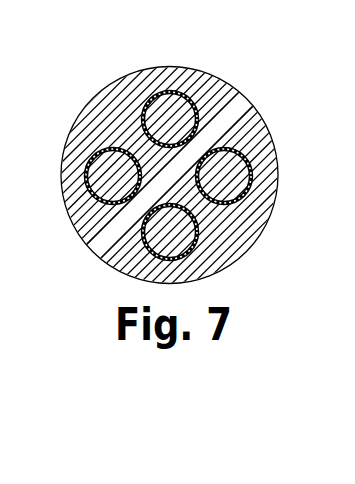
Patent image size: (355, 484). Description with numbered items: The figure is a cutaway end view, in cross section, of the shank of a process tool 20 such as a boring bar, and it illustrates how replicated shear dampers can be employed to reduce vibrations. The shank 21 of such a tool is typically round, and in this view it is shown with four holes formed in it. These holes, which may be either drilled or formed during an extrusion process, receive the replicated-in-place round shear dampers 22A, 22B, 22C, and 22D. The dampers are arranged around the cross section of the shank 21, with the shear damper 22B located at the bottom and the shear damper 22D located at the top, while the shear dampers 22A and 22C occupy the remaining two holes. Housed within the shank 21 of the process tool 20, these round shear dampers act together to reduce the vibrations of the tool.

The process tool 20 is at (62, 118).
The shank 21 is at (248, 143).
The replicated-in-place round shear damper 22A is at (98, 200).
The replicated-in-place round shear damper 22B is at (197, 247).
The replicated-in-place round shear damper 22C is at (253, 179).
The replicated-in-place round shear damper 22D is at (149, 98).